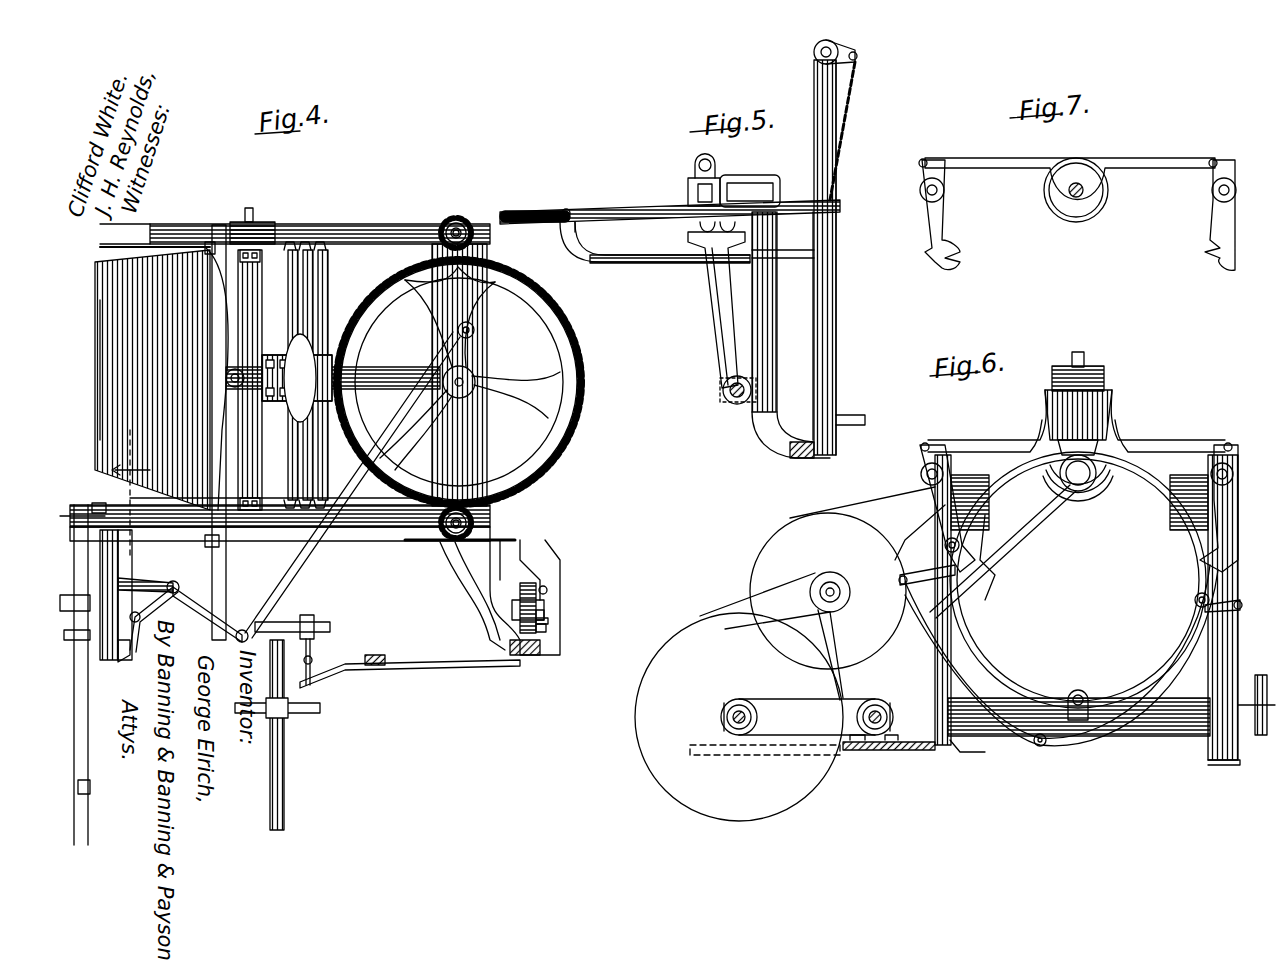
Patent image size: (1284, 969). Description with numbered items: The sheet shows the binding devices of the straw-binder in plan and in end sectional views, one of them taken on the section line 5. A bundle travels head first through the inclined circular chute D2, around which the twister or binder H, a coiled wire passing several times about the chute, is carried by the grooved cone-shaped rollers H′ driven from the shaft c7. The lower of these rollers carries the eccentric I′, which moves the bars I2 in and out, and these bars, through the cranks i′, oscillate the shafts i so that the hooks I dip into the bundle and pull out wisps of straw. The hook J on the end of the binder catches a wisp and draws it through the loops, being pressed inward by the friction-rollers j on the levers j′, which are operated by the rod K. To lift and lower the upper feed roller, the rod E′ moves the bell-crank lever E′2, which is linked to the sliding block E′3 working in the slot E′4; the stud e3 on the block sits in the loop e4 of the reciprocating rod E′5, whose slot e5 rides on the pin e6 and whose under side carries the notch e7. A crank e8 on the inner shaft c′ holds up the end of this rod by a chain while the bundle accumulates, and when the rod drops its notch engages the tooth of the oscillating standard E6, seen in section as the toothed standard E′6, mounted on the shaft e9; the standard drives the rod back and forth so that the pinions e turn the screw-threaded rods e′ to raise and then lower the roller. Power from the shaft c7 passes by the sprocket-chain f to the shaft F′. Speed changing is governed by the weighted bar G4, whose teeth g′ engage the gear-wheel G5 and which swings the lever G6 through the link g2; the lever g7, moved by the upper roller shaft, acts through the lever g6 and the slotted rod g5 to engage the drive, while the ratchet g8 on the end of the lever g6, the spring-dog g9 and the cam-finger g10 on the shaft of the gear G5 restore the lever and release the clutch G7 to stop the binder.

In FIG. 4, the chute D2 is at (215, 283).
In FIG. 4, the bars I2 is at (212, 333).
In FIG. 7, the bars I2 is at (980, 162).
In FIG. 6, the bars I2 is at (980, 445).
In FIG. 4, the twister or binder H is at (328, 292).
In FIG. 6, the twister or binder H is at (1200, 537).
In FIG. 4, the cone-shaped rollers H′ is at (395, 410).
In FIG. 6, the cone-shaped rollers H′ is at (1098, 465).
In FIG. 4, the rod E′ is at (565, 325).
In FIG. 4, the pinions e is at (457, 216).
In FIG. 4, the screw-threaded rods e′ is at (448, 226).
In FIG. 4, the section line 5 is at (131, 455).
In FIG. 4, the shafts i is at (278, 230).
In FIG. 7, the shafts i is at (920, 190).
In FIG. 6, the shafts i is at (921, 474).
In FIG. 4, the cranks i′ is at (216, 235).
In FIG. 7, the cranks i′ is at (920, 168).
In FIG. 6, the cranks i′ is at (922, 452).
In FIG. 4, the inner shaft c′ is at (80, 512).
In FIG. 5, the inner shaft c′ is at (812, 55).
In FIG. 6, the shaft c7 is at (720, 717).
In FIG. 4, the crank e8 is at (80, 660).
In FIG. 5, the crank e8 is at (856, 50).
In FIG. 4, the shaft e9 is at (75, 600).
In FIG. 5, the shaft e9 is at (734, 400).
In FIG. 4, the stud e3 is at (76, 634).
In FIG. 5, the stud e3 is at (712, 180).
In FIG. 5, the loop e4 is at (705, 160).
In FIG. 5, the slot e5 is at (522, 210).
In FIG. 4, the pin e6 is at (82, 795).
In FIG. 5, the pin e6 is at (566, 209).
In FIG. 5, the notch e7 is at (698, 232).
In FIG. 4, the standard E6 is at (85, 560).
In FIG. 4, the bell-crank lever E′2 is at (205, 590).
In FIG. 4, the sliding block E′3 is at (126, 658).
In FIG. 5, the sliding block E′3 is at (688, 182).
In FIG. 5, the slot E′4 is at (758, 183).
In FIG. 4, the reciprocating rod E′5 is at (136, 689).
In FIG. 5, the reciprocating rod E′5 is at (592, 212).
In FIG. 5, the standard E′6 is at (718, 312).
In FIG. 4, the weighted bar G4 is at (525, 660).
In FIG. 4, the gear-wheel G5 is at (520, 600).
In FIG. 4, the lever G6 is at (376, 656).
In FIG. 4, the clutch G7 is at (308, 618).
In FIG. 4, the teeth g′ is at (540, 652).
In FIG. 4, the link connection g2 is at (450, 668).
In FIG. 4, the vertical rod g5 is at (546, 590).
In FIG. 4, the lever g6 is at (530, 575).
In FIG. 4, the lever g7 is at (502, 560).
In FIG. 4, the ratchet g8 is at (545, 614).
In FIG. 4, the spring-dog g9 is at (548, 620).
In FIG. 4, the cam-finger g10 is at (546, 630).
In FIG. 7, the hooks I is at (962, 255).
In FIG. 6, the hooks I is at (968, 560).
In FIG. 7, the eccentric I′ is at (1068, 205).
In FIG. 6, the hook J is at (988, 530).
In FIG. 6, the friction-rollers j is at (945, 540).
In FIG. 6, the levers j′ is at (905, 565).
In FIG. 6, the rod K is at (1060, 745).
In FIG. 6, the shaft F′ is at (876, 705).
In FIG. 6, the sprocket-chain f is at (805, 733).